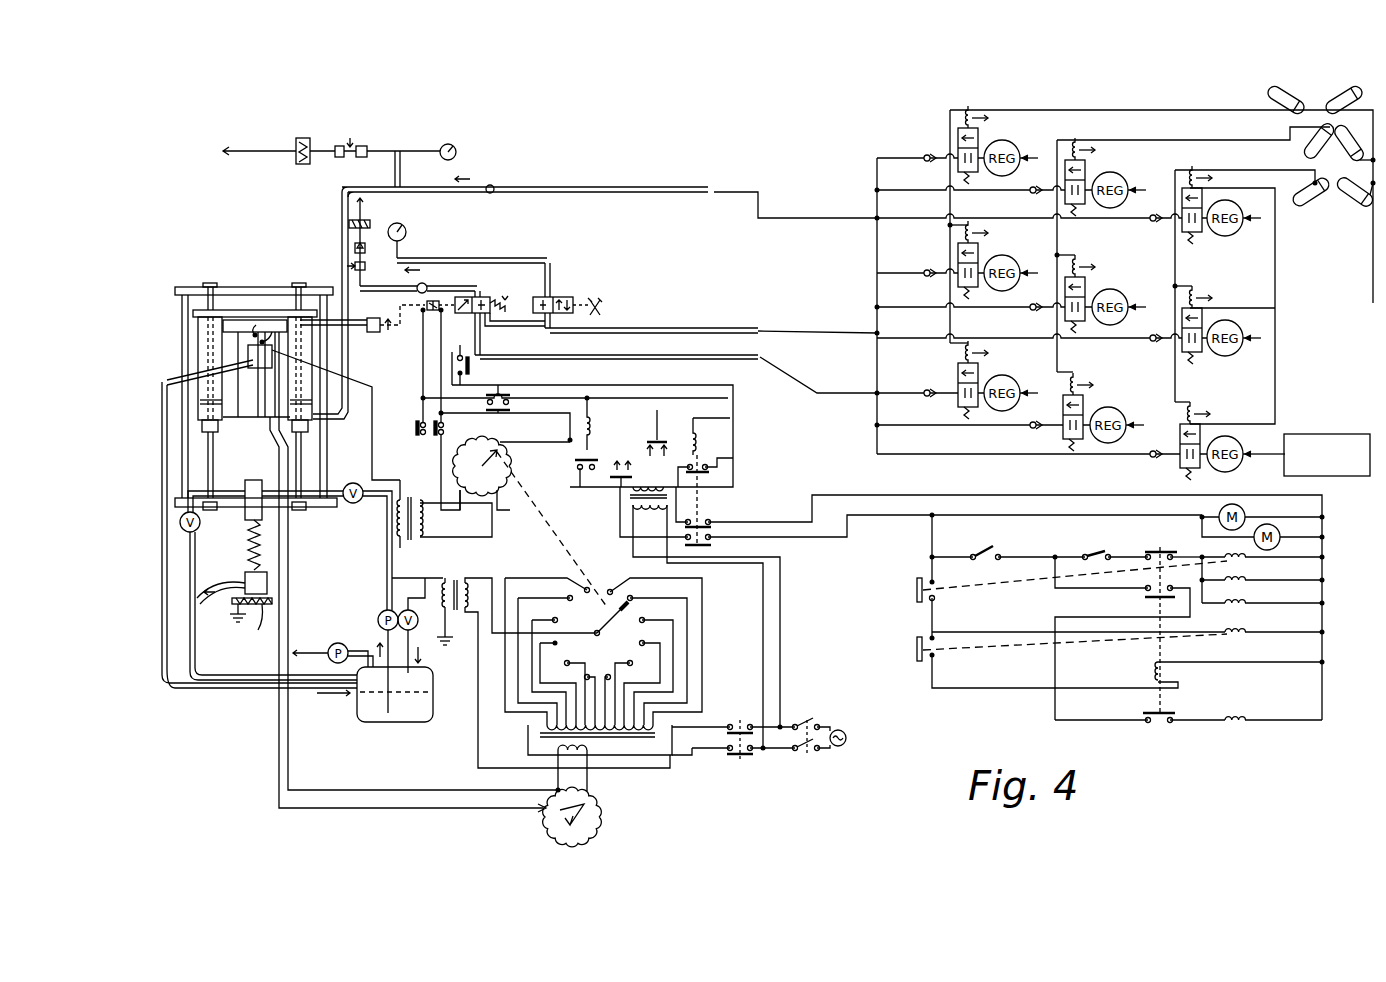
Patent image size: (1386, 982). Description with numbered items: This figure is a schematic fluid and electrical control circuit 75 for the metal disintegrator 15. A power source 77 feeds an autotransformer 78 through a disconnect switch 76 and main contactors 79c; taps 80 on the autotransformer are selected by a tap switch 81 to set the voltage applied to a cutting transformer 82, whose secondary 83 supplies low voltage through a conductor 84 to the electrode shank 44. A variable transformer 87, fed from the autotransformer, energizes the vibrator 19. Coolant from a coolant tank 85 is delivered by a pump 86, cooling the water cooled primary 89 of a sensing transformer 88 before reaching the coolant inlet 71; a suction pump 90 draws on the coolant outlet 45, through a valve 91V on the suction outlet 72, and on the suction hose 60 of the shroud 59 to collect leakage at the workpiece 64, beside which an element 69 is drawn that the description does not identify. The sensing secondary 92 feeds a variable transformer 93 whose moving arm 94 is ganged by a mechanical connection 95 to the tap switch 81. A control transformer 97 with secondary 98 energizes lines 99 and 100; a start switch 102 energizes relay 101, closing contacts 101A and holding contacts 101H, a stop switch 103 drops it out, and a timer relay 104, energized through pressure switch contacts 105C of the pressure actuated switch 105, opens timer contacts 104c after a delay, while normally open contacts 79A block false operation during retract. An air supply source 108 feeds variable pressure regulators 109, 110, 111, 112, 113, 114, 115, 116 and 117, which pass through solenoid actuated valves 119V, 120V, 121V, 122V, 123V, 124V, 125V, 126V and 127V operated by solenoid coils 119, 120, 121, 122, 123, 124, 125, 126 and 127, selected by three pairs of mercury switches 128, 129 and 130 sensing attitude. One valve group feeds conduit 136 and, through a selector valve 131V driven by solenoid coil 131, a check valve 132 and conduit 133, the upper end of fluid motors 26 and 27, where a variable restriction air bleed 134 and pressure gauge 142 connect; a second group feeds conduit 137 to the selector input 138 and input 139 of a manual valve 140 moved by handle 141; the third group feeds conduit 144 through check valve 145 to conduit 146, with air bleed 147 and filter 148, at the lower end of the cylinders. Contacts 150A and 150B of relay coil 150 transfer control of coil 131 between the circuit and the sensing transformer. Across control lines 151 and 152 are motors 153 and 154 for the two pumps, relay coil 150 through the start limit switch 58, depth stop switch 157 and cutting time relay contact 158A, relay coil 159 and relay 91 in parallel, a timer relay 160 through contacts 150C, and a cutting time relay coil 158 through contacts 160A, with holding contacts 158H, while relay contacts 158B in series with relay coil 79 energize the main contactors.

The metal disintegrator 15 is at (185, 287).
The vibrator 19 is at (247, 328).
The fluid motor 26 is at (223, 312).
The fluid motor 27 is at (313, 417).
The electrode shank 44 is at (247, 425).
The coolant outlet 45 is at (252, 370).
The start limit switch 58 is at (980, 562).
The shroud 59 is at (268, 575).
The suction hose 60 is at (206, 583).
The workpiece 64 is at (258, 632).
The contact plate 69 is at (272, 595).
The coolant inlet 71 is at (258, 488).
The suction outlet 72 is at (222, 491).
The control circuit 75 is at (830, 294).
The disconnect switch 76 is at (808, 756).
The power source 77 is at (847, 740).
The autotransformer 78 is at (640, 740).
The relay coil 79 is at (1244, 725).
The normally open contacts 79A is at (472, 366).
The main contactors 79c is at (742, 758).
The taps 80 is at (610, 668).
The tap switch 81 is at (606, 622).
The cutting transformer 82 is at (462, 580).
The secondary 83 is at (440, 590).
The conductor 84 is at (392, 578).
The coolant tank 85 is at (433, 680).
The coolant pump 86 is at (378, 618).
The variable transformer 87 is at (600, 808).
The sensing transformer 88 is at (387, 547).
The water cooled primary 89 is at (405, 498).
The suction pump 90 is at (334, 643).
The relay 91 is at (1244, 608).
The suction valve 91V is at (200, 528).
The secondary 92 is at (424, 530).
The variable transformer 93 is at (478, 446).
The moving arm 94 is at (503, 443).
The mechanical connection 95 is at (536, 534).
The control transformer 97 is at (634, 510).
The secondary 98 is at (633, 488).
The line 99 is at (570, 445).
The line 100 is at (733, 412).
The relay 101 is at (700, 440).
The contacts 101A is at (705, 547).
The holding contacts 101H is at (710, 470).
The start switch 102 is at (656, 436).
The stop switch 103 is at (618, 481).
The timer relay 104 is at (591, 428).
The timer contacts 104c is at (588, 458).
The pressure actuated switch 105 is at (373, 332).
The pressure switch contacts 105C is at (392, 330).
The air supply source 108 is at (1320, 434).
The variable pressure regulator 109 is at (1010, 174).
The variable pressure regulator 110 is at (1012, 288).
The variable pressure regulator 111 is at (1014, 407).
The variable pressure regulator 112 is at (1120, 205).
The variable pressure regulator 113 is at (1120, 322).
The variable pressure regulator 114 is at (1126, 436).
The variable pressure regulator 115 is at (1232, 236).
The variable pressure regulator 116 is at (1230, 356).
The variable pressure regulator 117 is at (1232, 472).
The solenoid coil 119 is at (971, 112).
The solenoid actuated valve 119V is at (985, 136).
The solenoid coil 120 is at (972, 234).
The solenoid actuated valve 120V is at (985, 250).
The solenoid coil 121 is at (972, 353).
The solenoid actuated valve 121V is at (985, 373).
The solenoid coil 122 is at (1078, 144).
The solenoid actuated valve 122V is at (1092, 166).
The solenoid coil 123 is at (1080, 262).
The solenoid actuated valve 123V is at (1092, 280).
The solenoid coil 124 is at (1078, 378).
The solenoid actuated valve 124V is at (1090, 398).
The solenoid coil 125 is at (1196, 170).
The solenoid actuated valve 125V is at (1210, 200).
The solenoid coil 126 is at (1196, 296).
The solenoid actuated valve 126V is at (1210, 320).
The solenoid coil 127 is at (1196, 412).
The solenoid actuated valve 127V is at (1208, 436).
The pair of mercury switches 128 is at (1352, 94).
The pair of mercury switches 129 is at (1337, 146).
The pair of mercury switches 130 is at (1333, 196).
The solenoid coil 131 is at (426, 302).
The selector valve 131V is at (478, 296).
The check valve 132 is at (426, 284).
The conduit 133 is at (342, 292).
The variable restriction air bleed 134 is at (357, 262).
The conduit 136 is at (745, 358).
The conduit 137 is at (690, 330).
The input 138 is at (490, 328).
The input 139 is at (552, 320).
The manual valve 140 is at (560, 296).
The handle 141 is at (600, 302).
The pressure gauge 142 is at (407, 232).
The conduit 144 is at (722, 190).
The check valve 145 is at (495, 193).
The conduit 146 is at (383, 193).
The variable air bleed 147 is at (366, 146).
The filter 148 is at (302, 138).
The relay coil 150 is at (1244, 562).
The normally open relay contacts 150A is at (410, 425).
The normally closed contacts 150B is at (505, 412).
The normally open contacts 150C is at (916, 592).
The control line 151 is at (936, 540).
The control line 152 is at (1323, 606).
The motor 153 is at (1246, 512).
The motor 154 is at (1280, 534).
The depth stop switch 157 is at (1098, 552).
The cutting time relay coil 158 is at (1165, 672).
The cutting time relay contact 158A is at (1135, 550).
The relay contacts 158B is at (1176, 711).
The holding contacts 158H is at (1148, 598).
The relay coil 159 is at (1244, 585).
The timer relay 160 is at (1244, 636).
The normally open contacts 160A is at (916, 648).